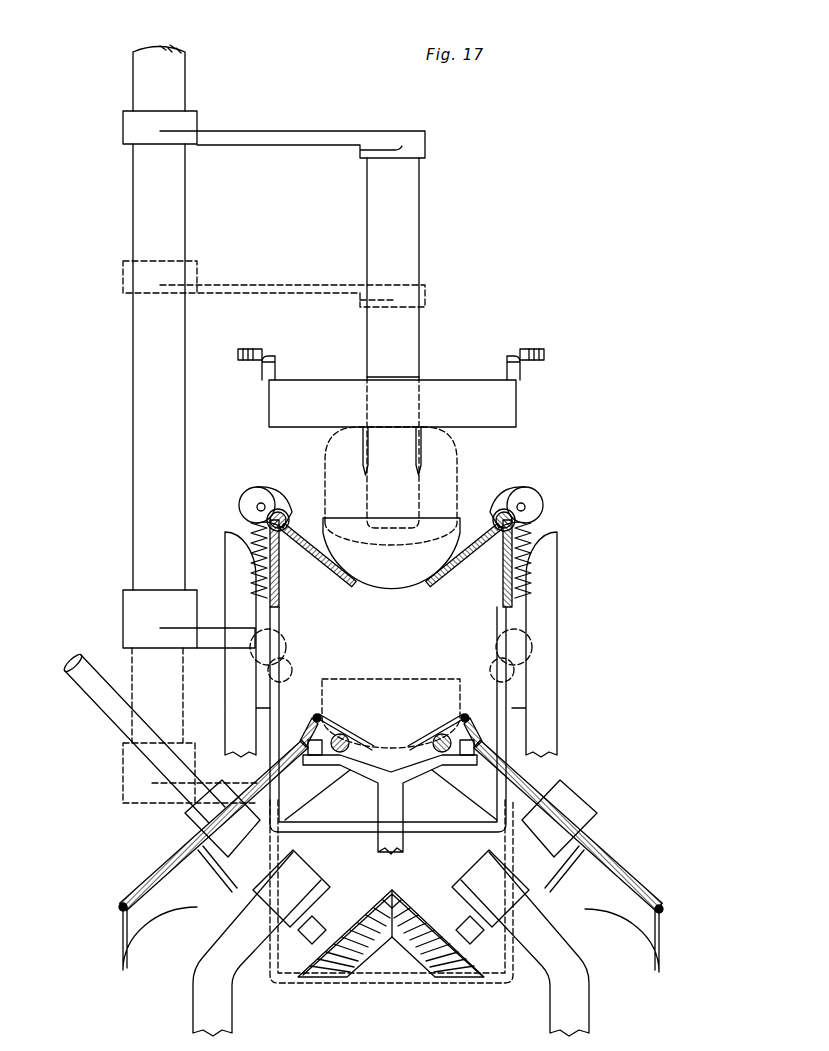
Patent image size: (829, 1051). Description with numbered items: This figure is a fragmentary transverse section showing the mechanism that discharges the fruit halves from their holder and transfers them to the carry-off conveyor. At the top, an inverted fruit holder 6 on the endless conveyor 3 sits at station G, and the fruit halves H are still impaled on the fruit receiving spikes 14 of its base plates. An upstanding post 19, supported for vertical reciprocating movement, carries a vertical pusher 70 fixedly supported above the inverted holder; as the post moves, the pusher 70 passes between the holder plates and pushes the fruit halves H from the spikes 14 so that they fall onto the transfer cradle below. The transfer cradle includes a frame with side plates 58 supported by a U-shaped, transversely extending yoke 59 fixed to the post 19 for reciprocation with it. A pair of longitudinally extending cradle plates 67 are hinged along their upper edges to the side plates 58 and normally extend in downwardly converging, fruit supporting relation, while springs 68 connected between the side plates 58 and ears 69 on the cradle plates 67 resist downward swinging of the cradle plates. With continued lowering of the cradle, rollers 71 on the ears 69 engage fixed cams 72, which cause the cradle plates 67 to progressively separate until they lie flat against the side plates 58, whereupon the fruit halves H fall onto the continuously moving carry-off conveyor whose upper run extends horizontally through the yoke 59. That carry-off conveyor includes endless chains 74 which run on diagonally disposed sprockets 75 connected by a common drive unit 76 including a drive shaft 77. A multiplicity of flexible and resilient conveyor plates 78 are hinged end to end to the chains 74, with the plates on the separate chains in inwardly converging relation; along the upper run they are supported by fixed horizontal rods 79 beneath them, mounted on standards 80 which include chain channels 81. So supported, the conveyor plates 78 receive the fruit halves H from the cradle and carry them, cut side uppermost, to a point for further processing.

The endless conveyor 3 is at (262, 350).
The fruit holder 6 is at (312, 378).
The fruit receiving spikes 14 is at (418, 455).
The upstanding post 19 is at (150, 383).
The side plates 58 is at (280, 598).
The yoke 59 is at (348, 834).
The cradle plates 67 is at (345, 578).
The springs 68 is at (268, 560).
The ears 69 is at (272, 495).
The vertical pusher 70 is at (415, 250).
The rollers 71 is at (248, 492).
The fixed cams 72 is at (240, 565).
The endless chains 74 is at (310, 716).
The diagonally disposed sprockets 75 is at (160, 870).
The drive unit 76 is at (430, 975).
The drive shaft 77 is at (108, 705).
The conveyor plates 78 is at (342, 736).
The horizontal rods 79 is at (440, 735).
The standards 80 is at (418, 775).
The chain channels 81 is at (312, 755).
The fruit halves H is at (455, 505).